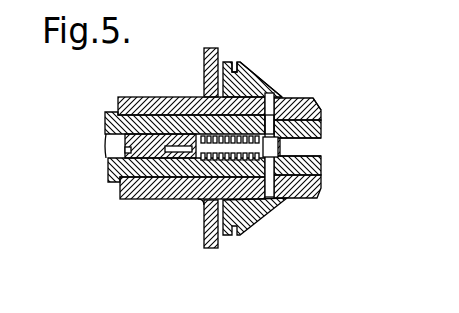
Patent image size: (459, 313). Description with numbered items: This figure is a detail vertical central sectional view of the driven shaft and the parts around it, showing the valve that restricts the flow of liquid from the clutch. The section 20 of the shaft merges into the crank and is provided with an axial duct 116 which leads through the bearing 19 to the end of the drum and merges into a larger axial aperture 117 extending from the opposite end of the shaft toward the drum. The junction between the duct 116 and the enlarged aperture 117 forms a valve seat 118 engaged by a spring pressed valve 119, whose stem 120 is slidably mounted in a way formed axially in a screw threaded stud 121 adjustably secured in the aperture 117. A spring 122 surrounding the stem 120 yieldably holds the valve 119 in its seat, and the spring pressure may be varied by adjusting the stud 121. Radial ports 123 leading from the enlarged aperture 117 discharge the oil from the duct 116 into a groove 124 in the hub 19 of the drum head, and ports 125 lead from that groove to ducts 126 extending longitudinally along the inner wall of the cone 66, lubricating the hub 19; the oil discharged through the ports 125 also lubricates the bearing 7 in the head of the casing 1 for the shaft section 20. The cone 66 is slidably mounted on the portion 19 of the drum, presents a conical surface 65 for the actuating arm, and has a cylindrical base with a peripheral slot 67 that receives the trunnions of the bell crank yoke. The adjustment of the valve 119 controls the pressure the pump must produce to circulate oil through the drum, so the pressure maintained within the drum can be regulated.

The casing 1 is at (207, 244).
The bearing 7 is at (132, 192).
The bearing portion of the drum 19 is at (321, 198).
The section of the shaft 20 is at (138, 125).
The conical surface 65 is at (262, 72).
The cone 66 is at (240, 62).
The peripheral slot 67 is at (234, 61).
The axial duct 116 is at (315, 148).
The axial aperture 117 is at (214, 149).
The valve seat 118 is at (322, 128).
The spring pressed valve 119 is at (305, 170).
The stem 120 is at (196, 148).
The screw threaded stud 121 is at (125, 152).
The spring 122 is at (198, 107).
The radial ports 123 is at (322, 109).
The groove 124 is at (297, 108).
The ports 125 is at (273, 125).
The ducts 126 is at (283, 97).